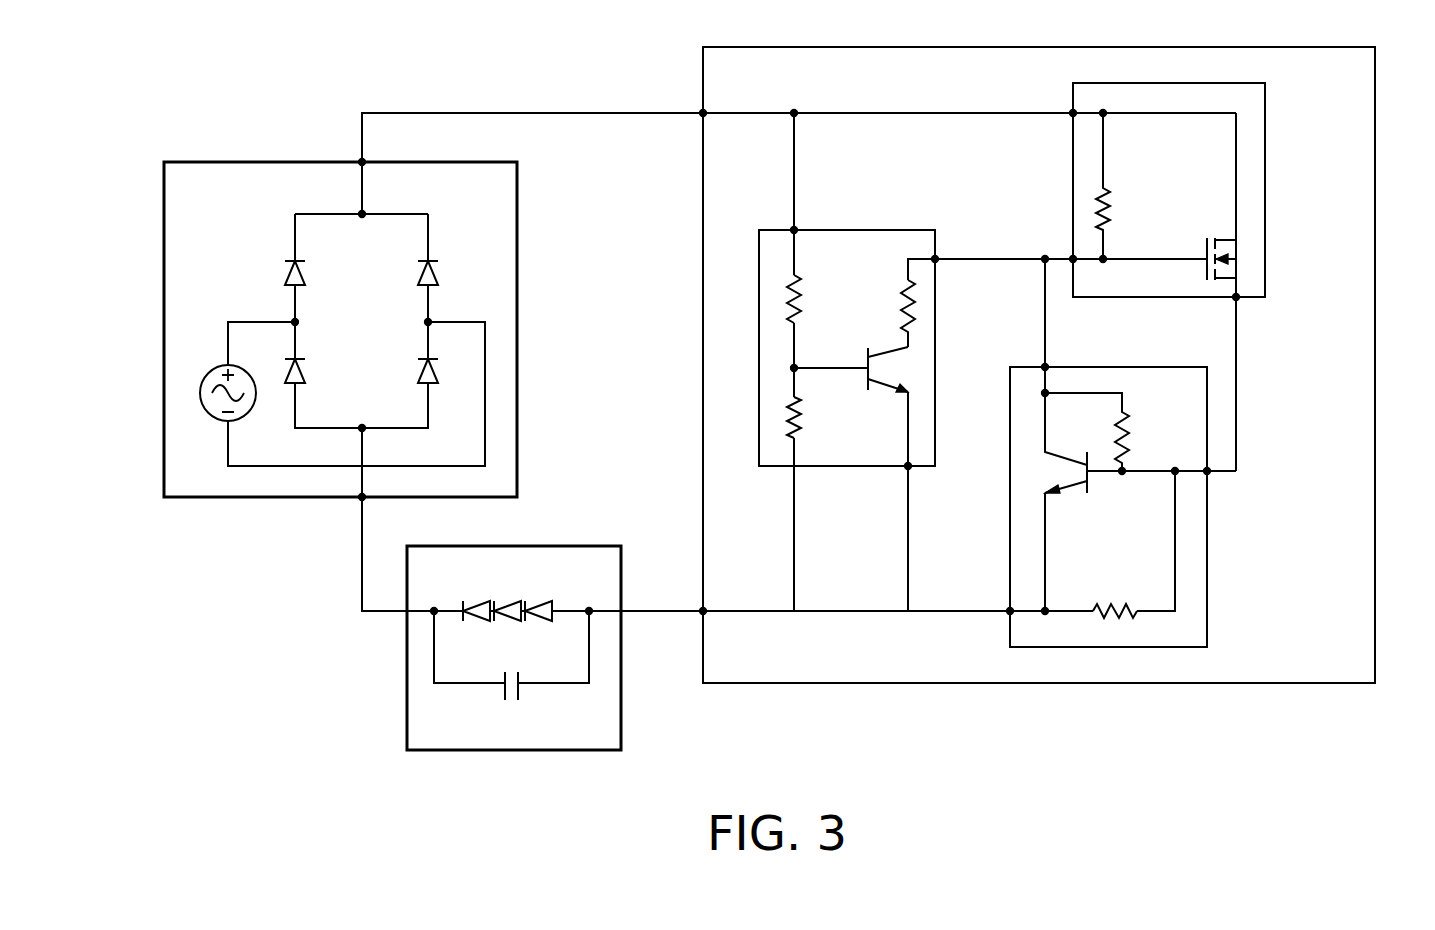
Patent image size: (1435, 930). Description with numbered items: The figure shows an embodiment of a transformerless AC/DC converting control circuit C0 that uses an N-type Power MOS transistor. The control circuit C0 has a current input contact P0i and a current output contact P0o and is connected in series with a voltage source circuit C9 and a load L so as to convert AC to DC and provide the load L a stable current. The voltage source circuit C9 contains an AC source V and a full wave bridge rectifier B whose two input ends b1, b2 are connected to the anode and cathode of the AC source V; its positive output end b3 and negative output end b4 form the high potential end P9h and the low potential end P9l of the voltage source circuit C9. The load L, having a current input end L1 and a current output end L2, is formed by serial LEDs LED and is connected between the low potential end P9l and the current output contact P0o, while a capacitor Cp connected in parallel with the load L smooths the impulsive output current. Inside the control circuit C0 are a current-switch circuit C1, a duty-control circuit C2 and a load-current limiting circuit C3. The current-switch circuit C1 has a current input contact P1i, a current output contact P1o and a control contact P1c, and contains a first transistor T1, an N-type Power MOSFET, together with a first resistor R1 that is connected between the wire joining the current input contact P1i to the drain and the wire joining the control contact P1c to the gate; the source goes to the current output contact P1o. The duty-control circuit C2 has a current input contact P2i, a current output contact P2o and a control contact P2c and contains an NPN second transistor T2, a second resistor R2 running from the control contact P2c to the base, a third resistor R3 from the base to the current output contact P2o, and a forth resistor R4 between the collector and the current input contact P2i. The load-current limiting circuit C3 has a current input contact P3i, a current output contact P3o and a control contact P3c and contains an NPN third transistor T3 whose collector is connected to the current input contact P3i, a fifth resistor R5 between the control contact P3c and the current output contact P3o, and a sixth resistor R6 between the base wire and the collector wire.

The control circuit C0 is at (1378, 410).
The voltage source circuit C9 is at (185, 160).
The full wave bridge rectifier B is at (292, 216).
The input end b1 is at (292, 322).
The input end b2 is at (432, 320).
The positive output end b3 is at (364, 226).
The negative output end b4 is at (360, 420).
The AC source V is at (327, 394).
The high potential end P9h is at (333, 148).
The low potential end P9l is at (334, 518).
The load L is at (515, 757).
The current input end L1 is at (584, 596).
The current output end L2 is at (439, 596).
The serial LEDs LED is at (510, 591).
The capacitor Cp is at (511, 673).
The current input contact P0i is at (681, 97).
The current output contact P0o is at (682, 627).
The duty-control circuit C2 is at (880, 230).
The control contact P2c is at (770, 172).
The second resistor R2 is at (812, 299).
The third resistor R3 is at (812, 417).
The forth resistor R4 is at (900, 303).
The second transistor T2 is at (850, 380).
The current input contact P2i is at (1070, 272).
The current output contact P2o is at (931, 482).
The current-switch circuit C1 is at (1268, 200).
The current input contact P1i is at (1048, 97).
The control contact P1c is at (1068, 256).
The first resistor R1 is at (1123, 186).
The first transistor T1 is at (1209, 245).
The current output contact P1o is at (1261, 311).
The load-current limiting circuit C3 is at (1207, 560).
The current input contact P3i is at (1064, 350).
The sixth resistor R6 is at (1103, 432).
The third transistor T3 is at (1066, 494).
The control contact P3c is at (1217, 486).
The fifth resistor R5 is at (1115, 592).
The current output contact P3o is at (1004, 627).